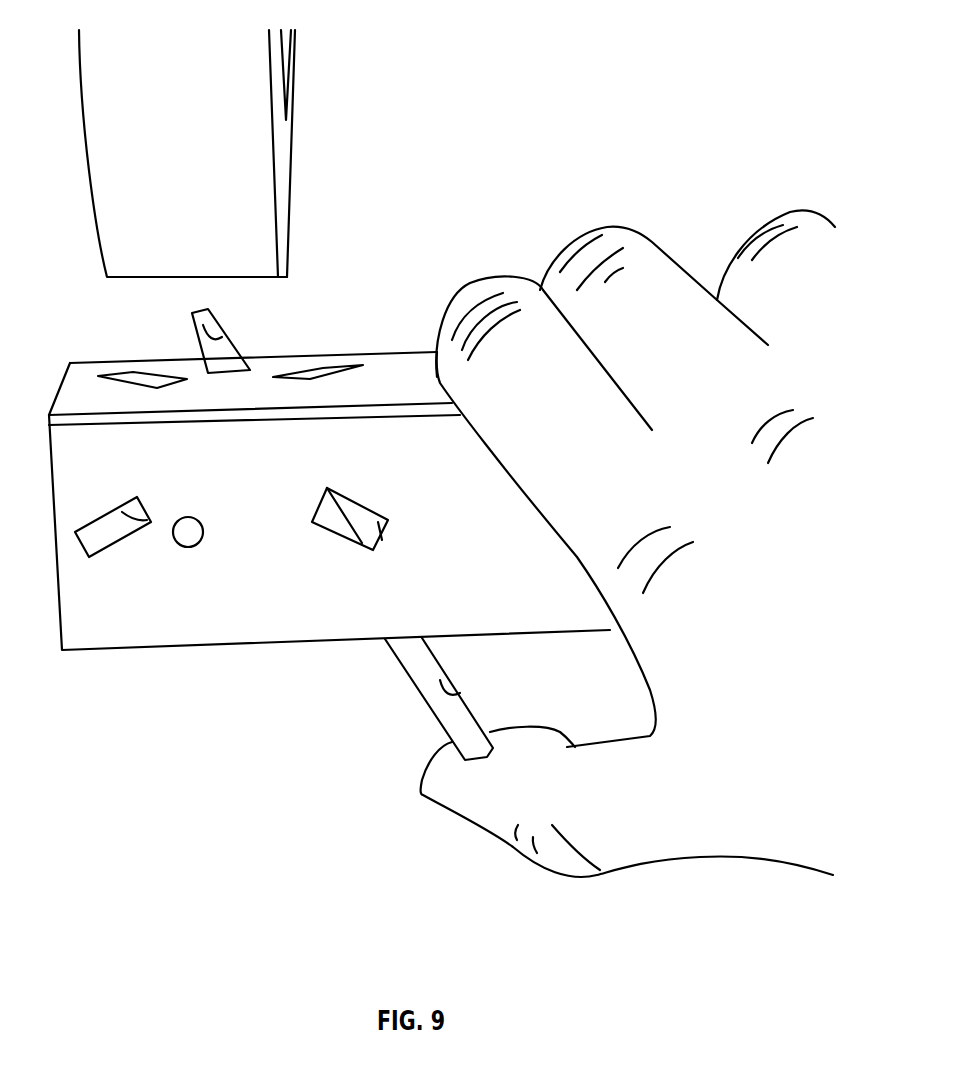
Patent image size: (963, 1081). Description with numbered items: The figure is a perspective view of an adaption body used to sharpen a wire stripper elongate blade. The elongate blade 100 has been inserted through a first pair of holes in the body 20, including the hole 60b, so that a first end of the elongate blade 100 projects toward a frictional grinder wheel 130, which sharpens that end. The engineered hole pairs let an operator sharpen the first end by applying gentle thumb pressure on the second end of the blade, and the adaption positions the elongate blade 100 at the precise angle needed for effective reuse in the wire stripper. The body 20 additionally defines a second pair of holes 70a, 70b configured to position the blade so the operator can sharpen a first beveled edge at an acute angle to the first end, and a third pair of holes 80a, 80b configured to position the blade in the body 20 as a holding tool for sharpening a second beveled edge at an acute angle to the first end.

The frictional grinder wheel 130 is at (247, 237).
The body 20 is at (215, 597).
The hole 60b is at (222, 375).
The hole 70b is at (153, 380).
The hole 80b is at (322, 370).
The hole 80a is at (150, 522).
The hole 70a is at (382, 540).
The elongate blade 100 is at (225, 335).